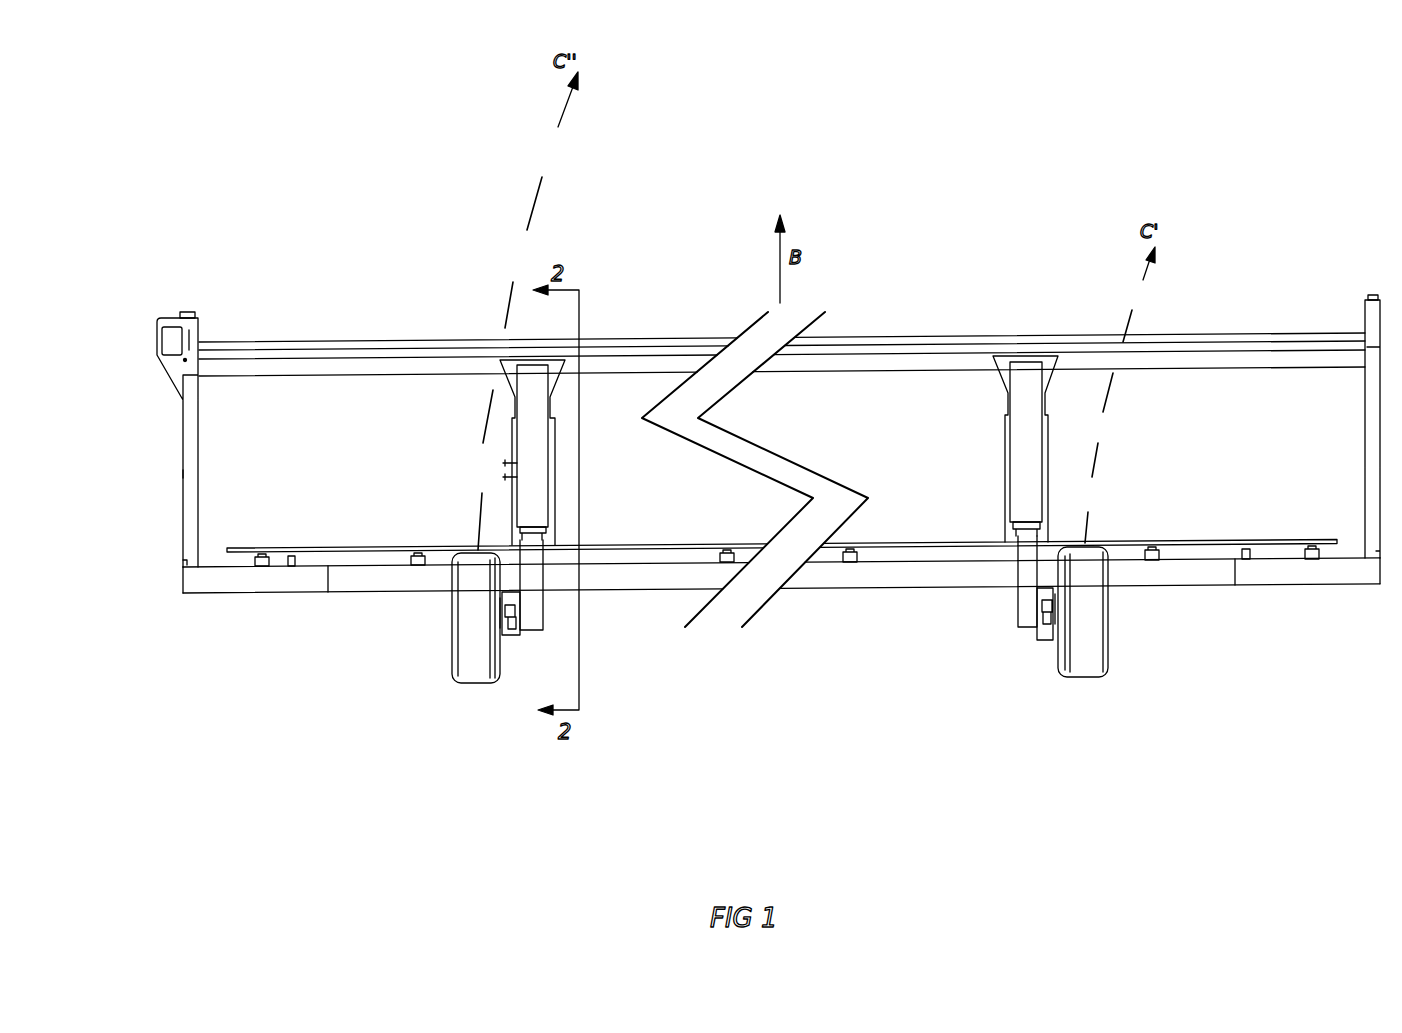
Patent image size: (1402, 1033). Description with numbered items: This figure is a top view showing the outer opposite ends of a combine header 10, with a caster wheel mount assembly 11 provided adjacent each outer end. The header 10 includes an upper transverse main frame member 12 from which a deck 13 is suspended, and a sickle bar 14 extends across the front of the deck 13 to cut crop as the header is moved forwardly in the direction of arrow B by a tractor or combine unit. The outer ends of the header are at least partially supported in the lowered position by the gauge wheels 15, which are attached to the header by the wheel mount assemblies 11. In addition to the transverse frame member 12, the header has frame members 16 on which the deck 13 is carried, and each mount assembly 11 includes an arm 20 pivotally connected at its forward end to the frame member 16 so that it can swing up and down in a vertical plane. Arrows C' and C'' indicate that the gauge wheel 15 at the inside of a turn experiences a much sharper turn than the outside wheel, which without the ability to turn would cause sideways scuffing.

The header 10 is at (1252, 332).
The caster wheel mount assembly 11 is at (532, 646).
The upper transverse main frame member 12 is at (1163, 577).
The deck 13 is at (973, 443).
The sickle bar 14 is at (873, 337).
The gauge wheel 15 is at (472, 673).
The frame member 16 is at (555, 484).
The arm 20 is at (537, 601).